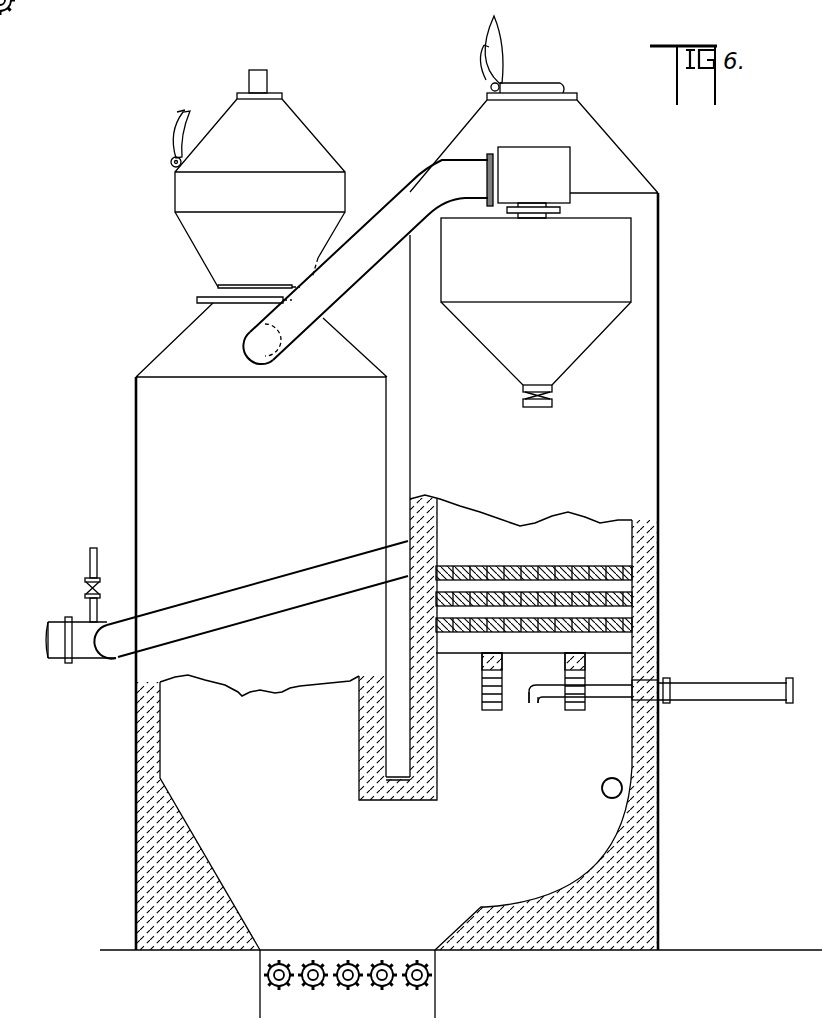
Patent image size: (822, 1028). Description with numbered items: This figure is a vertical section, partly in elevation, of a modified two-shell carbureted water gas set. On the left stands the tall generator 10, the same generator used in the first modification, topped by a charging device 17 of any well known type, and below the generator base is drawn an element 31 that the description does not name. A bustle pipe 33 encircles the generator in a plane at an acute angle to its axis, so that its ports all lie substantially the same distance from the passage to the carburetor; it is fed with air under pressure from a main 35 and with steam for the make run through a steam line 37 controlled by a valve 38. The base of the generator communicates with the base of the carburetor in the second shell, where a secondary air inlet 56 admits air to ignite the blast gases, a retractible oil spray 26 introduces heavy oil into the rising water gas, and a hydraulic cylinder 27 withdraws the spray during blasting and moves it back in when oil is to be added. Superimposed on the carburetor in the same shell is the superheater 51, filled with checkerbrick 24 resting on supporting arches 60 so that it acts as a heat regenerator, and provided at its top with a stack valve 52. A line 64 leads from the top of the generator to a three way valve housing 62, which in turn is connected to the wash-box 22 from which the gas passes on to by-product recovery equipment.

The generator 10 is at (133, 426).
The charging device 17 is at (305, 129).
The wash-box 22 is at (623, 270).
The checkerbrick 24 is at (527, 598).
The retractible oil spray 26 is at (531, 705).
The hydraulic cylinder 27 is at (724, 689).
The conveyor rollers 31 is at (378, 964).
The bustle pipe 33 is at (115, 648).
The main 35 is at (60, 655).
The steam line 37 is at (97, 548).
The valve 38 is at (86, 590).
The superheater 51 is at (620, 555).
The stack valve 52 is at (506, 50).
The secondary air inlet 56 is at (601, 789).
The supporting arches 60 is at (586, 673).
The three way valve housing 62 is at (535, 156).
The line 64 is at (397, 193).